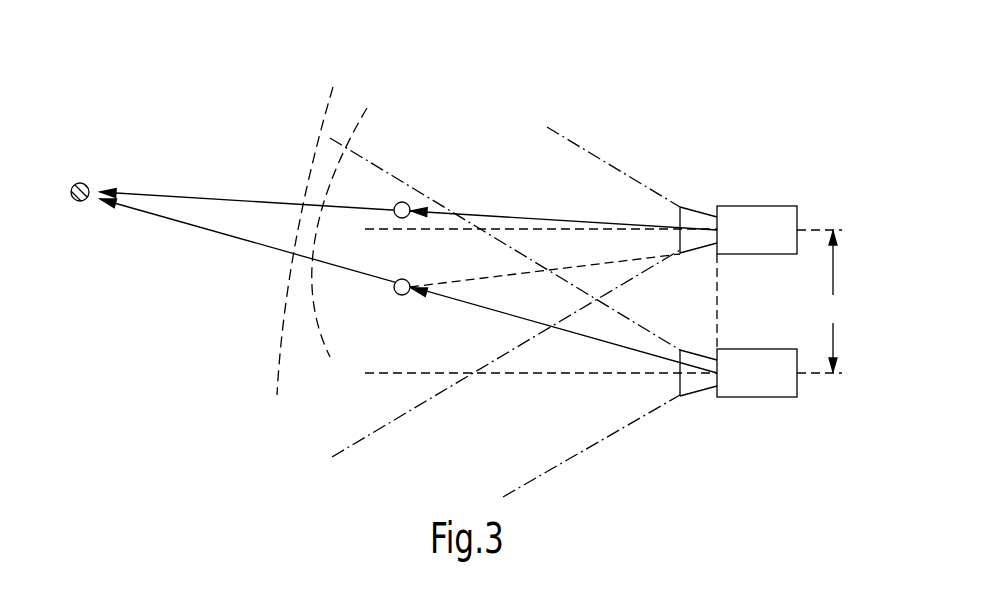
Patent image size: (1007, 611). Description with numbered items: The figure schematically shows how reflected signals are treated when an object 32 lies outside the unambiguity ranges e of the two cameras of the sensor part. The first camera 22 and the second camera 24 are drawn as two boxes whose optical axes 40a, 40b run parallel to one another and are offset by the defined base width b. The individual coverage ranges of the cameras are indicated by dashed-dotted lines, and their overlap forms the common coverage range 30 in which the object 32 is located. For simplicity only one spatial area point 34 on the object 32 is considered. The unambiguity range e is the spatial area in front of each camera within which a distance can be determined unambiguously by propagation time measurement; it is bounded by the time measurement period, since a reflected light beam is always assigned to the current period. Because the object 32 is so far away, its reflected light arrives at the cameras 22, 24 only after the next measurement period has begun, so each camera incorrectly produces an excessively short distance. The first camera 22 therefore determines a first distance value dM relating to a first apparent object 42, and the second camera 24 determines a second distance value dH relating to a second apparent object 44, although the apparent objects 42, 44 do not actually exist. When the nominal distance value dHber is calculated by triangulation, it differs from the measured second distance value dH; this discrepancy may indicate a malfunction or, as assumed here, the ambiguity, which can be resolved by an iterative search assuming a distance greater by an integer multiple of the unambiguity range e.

The first camera 22 is at (760, 397).
The second camera 24 is at (757, 206).
The common coverage range 30 is at (422, 355).
The object 32 is at (87, 170).
The spatial area point 34 is at (90, 184).
The optical axis of the first camera 40a is at (381, 373).
The optical axis of the second camera 40b is at (373, 229).
The first apparent object 42 is at (398, 294).
The second apparent object 44 is at (405, 201).
The unambiguity range e is at (323, 118).
The second distance value dH is at (528, 217).
The nominal distance value dHber is at (503, 274).
The first distance value dM is at (596, 340).
The base width b is at (833, 301).